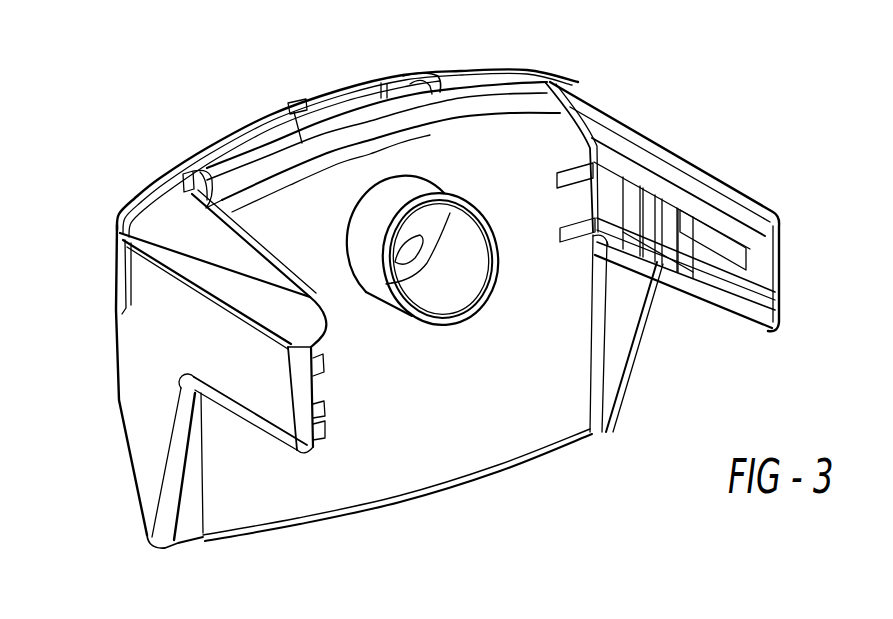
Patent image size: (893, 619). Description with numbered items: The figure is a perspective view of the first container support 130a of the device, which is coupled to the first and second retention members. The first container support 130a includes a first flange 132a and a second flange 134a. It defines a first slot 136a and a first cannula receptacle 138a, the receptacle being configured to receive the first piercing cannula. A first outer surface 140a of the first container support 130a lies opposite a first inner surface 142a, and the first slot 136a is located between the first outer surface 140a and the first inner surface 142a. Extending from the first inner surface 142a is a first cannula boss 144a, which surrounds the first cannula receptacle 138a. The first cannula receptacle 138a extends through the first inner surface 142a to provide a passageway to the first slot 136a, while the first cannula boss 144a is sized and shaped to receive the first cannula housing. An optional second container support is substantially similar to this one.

The first container support 130a is at (119, 153).
The first flange 132a is at (677, 155).
The second flange 134a is at (267, 368).
The first slot 136a is at (277, 110).
The first cannula receptacle 138a is at (437, 227).
The first outer surface 140a is at (117, 400).
The first inner surface 142a is at (292, 205).
The first cannula boss 144a is at (407, 82).